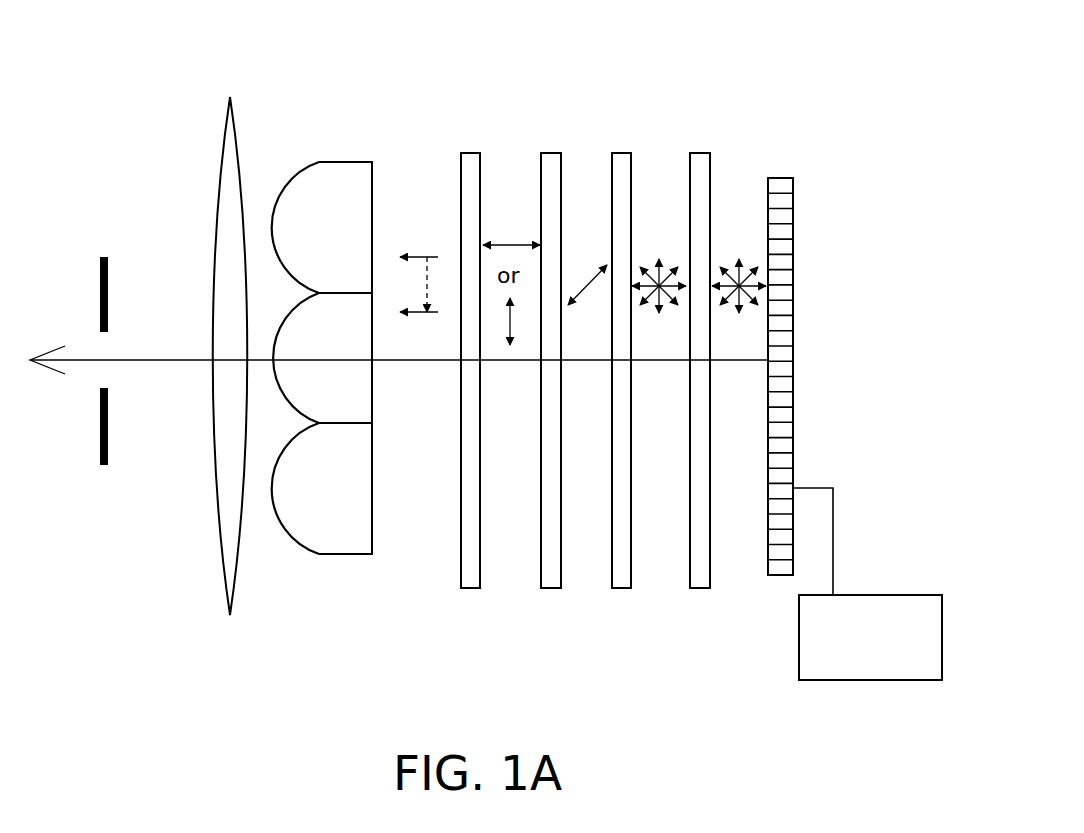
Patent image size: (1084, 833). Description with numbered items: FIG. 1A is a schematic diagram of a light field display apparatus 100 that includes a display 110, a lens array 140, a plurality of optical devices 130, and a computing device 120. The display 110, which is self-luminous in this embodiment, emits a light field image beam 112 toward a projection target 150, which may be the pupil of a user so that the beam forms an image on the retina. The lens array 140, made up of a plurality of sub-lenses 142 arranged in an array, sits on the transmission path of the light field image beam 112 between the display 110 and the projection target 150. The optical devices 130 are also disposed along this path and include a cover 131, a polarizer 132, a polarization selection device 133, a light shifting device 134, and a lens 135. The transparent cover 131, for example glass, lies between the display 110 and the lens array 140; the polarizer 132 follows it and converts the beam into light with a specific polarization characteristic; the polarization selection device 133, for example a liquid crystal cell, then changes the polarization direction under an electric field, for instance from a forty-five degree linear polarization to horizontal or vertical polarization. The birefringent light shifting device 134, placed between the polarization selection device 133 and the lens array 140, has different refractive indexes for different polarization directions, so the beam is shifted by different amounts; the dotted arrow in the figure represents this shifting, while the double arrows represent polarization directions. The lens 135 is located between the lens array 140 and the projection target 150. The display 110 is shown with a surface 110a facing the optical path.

The light field display apparatus 100 is at (947, 761).
The display 110 is at (786, 178).
The sensing surface of image sensor 110a is at (767, 532).
The light field image beam 112 is at (735, 360).
The computing device 120 is at (910, 595).
The optical devices 130 is at (585, 370).
The cover 131 is at (699, 153).
The polarizer 132 is at (618, 590).
The polarization selection device 133 is at (549, 153).
The light shifting device 134 is at (468, 590).
The lens 135 is at (230, 97).
The lens array 140 is at (352, 162).
The sub-lenses 142 is at (318, 210).
The projection target 150 is at (103, 333).